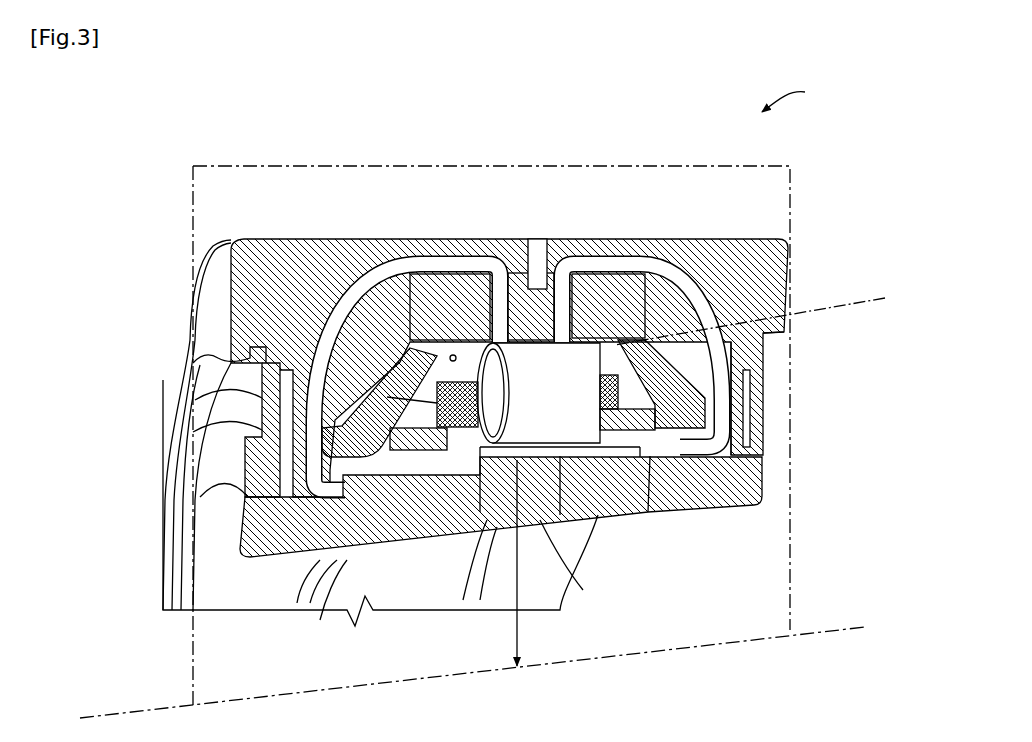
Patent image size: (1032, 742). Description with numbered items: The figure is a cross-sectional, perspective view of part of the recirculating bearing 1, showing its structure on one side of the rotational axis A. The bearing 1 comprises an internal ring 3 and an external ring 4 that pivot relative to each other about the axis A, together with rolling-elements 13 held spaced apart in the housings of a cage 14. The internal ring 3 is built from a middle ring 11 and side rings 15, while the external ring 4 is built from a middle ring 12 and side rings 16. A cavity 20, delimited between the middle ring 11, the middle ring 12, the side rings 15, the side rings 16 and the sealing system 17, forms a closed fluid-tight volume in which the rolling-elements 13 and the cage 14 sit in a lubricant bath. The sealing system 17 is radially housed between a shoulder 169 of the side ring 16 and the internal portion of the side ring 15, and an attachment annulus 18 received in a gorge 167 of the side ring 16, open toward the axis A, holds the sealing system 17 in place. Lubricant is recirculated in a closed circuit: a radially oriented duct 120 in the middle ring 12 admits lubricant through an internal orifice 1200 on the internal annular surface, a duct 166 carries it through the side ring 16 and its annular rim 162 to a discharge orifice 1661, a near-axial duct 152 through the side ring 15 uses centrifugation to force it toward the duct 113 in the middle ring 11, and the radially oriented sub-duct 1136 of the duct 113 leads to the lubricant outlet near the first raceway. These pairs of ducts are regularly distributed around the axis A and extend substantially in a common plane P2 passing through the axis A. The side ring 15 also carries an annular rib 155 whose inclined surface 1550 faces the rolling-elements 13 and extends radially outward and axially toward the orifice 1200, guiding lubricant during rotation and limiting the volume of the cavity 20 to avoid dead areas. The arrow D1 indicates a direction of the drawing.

The recirculating bearing 1 is at (793, 98).
The internal ring 3 is at (770, 545).
The external ring 4 is at (803, 295).
The middle ring 11 is at (567, 588).
The middle ring 12 is at (560, 240).
The rolling-elements 13 is at (560, 415).
The cage 14 is at (447, 355).
The side ring 15 is at (178, 512).
The side ring 16 is at (312, 236).
The sealing system 17 is at (220, 460).
The attachment annulus 18 is at (207, 407).
The cavity 20 is at (231, 240).
The duct 113 is at (607, 440).
The duct 120 is at (462, 285).
The duct 152 is at (347, 560).
The annular rib 155 is at (787, 320).
The annular rim 162 is at (693, 453).
The duct 166 is at (358, 300).
The gorge 167 is at (207, 360).
The shoulder 169 is at (228, 300).
The sub-duct 1136 is at (403, 560).
The internal orifice 1200 is at (438, 356).
The inclined surface 1550 is at (713, 377).
The discharge orifice 1661 is at (700, 452).
The rotational axis A is at (825, 633).
The direction D1 is at (535, 563).
The plane P2 is at (787, 413).